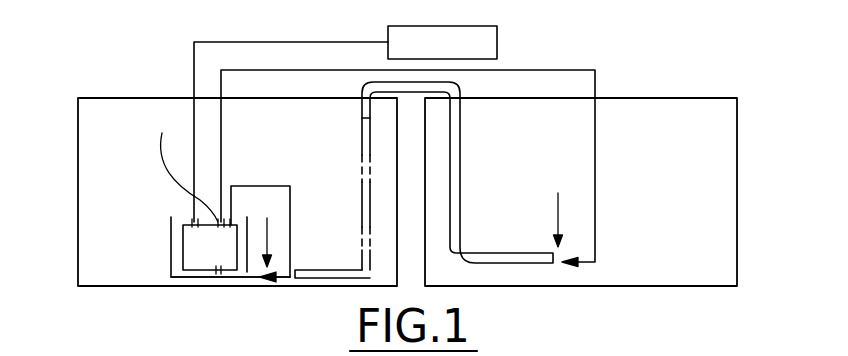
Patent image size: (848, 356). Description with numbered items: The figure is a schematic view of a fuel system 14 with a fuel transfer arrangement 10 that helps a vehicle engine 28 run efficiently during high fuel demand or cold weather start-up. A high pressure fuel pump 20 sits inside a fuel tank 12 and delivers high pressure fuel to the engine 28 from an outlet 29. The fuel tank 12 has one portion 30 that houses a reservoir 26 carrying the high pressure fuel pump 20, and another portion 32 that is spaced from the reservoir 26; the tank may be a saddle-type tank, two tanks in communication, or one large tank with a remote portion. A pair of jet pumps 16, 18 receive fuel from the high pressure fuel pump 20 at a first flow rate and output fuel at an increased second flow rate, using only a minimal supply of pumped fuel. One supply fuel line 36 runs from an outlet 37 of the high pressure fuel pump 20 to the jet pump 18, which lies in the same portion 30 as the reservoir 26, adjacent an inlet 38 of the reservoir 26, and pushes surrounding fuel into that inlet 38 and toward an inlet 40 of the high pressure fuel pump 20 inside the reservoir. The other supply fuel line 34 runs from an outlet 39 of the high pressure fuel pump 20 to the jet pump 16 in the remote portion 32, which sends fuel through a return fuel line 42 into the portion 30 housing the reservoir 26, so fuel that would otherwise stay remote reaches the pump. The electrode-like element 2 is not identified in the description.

The electrode / ground strip 2 is at (469, 243).
The fuel transfer arrangement 10 is at (203, 199).
The fuel tank 12 is at (443, 173).
The fuel system 14 is at (482, 135).
The jet pump 16 is at (563, 206).
The jet pump 18 is at (273, 237).
The high pressure fuel pump 20 is at (183, 242).
The reservoir 26 is at (188, 286).
The vehicle engine 28 is at (443, 26).
The outlet 29 is at (193, 218).
The portion of the fuel tank 30 is at (356, 234).
The portion of the fuel tank 32 is at (706, 220).
The supply fuel line 34 is at (222, 126).
The supply fuel line 36 is at (233, 186).
The outlet 37 is at (183, 165).
The inlet 38 is at (252, 280).
The outlet 39 is at (228, 222).
The inlet 40 is at (218, 271).
The return fuel line 42 is at (362, 207).